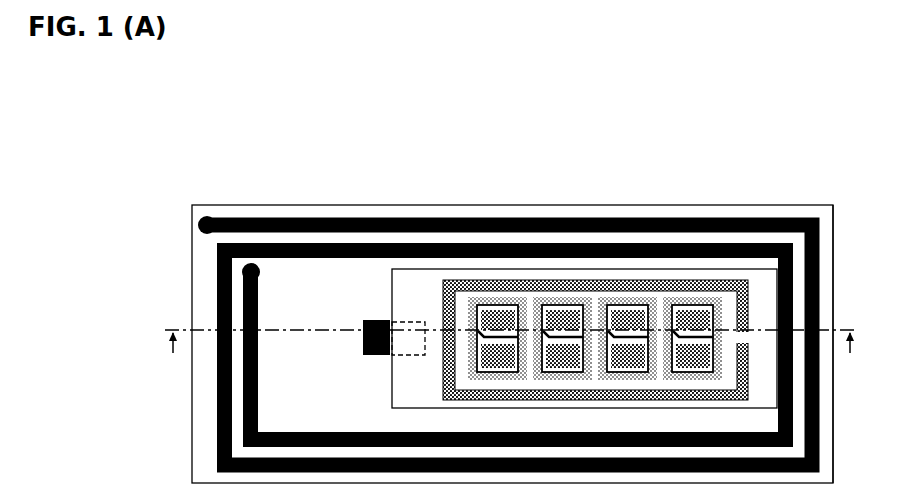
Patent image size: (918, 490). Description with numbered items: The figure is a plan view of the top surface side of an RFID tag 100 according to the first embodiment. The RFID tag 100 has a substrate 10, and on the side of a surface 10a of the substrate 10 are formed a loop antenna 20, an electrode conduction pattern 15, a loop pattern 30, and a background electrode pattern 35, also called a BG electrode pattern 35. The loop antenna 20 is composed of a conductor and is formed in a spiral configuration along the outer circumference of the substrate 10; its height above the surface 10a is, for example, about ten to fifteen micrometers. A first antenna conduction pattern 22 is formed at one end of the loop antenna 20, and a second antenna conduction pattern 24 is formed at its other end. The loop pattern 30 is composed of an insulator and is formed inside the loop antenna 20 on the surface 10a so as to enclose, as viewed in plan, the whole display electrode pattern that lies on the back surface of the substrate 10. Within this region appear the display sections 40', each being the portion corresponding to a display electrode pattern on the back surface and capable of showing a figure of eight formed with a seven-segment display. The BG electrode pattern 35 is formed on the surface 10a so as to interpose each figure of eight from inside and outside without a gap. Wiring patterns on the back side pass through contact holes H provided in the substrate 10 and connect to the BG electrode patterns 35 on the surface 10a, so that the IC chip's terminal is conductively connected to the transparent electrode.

The RFID tag 100 is at (193, 158).
The substrate 10 is at (424, 207).
The surface of the substrate 10a is at (762, 212).
The loop antenna 20 is at (343, 235).
The first antenna conduction pattern 22 is at (208, 216).
The second antenna conduction pattern 24 is at (261, 270).
The loop pattern 30 is at (565, 402).
The background electrode pattern 35 is at (632, 402).
The electrode conduction pattern 15 is at (373, 358).
The display section 40' is at (595, 274).
The contact hole H is at (514, 303).